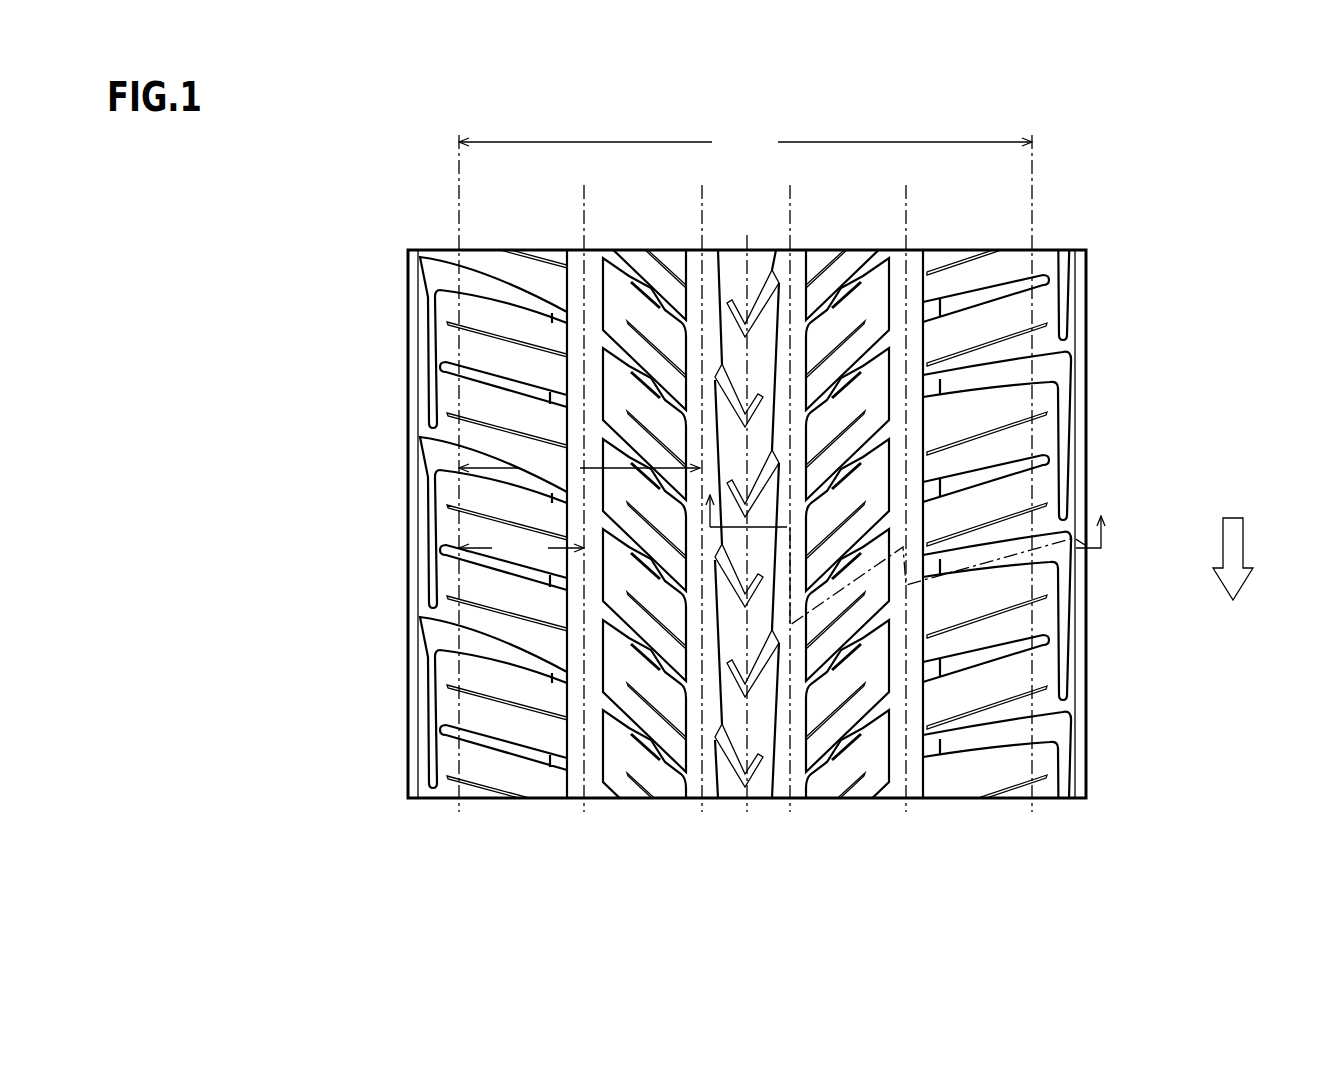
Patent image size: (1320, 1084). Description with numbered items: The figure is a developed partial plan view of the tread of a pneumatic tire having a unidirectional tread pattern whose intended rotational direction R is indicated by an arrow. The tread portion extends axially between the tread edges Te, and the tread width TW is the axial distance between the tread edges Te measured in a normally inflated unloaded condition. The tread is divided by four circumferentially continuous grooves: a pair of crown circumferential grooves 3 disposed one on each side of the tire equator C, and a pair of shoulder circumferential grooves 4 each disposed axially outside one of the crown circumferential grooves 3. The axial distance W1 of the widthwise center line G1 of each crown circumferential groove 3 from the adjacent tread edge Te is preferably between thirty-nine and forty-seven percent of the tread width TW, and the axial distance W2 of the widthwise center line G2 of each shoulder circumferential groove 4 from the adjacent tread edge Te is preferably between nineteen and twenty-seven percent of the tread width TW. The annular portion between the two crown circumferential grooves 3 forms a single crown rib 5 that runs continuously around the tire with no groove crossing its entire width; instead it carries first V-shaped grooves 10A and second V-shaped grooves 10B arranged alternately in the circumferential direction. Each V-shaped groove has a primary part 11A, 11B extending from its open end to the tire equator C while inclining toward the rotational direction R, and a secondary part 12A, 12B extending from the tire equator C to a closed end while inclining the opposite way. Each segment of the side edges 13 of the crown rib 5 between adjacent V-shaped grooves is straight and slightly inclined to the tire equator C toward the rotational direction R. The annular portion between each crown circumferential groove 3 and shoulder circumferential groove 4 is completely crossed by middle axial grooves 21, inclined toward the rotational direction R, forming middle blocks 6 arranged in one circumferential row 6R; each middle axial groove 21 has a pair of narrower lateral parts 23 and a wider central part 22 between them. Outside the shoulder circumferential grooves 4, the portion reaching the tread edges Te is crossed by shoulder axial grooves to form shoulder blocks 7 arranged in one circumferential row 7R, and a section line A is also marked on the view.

The crown circumferential groove 3 is at (734, 480).
The shoulder circumferential groove 4 is at (748, 487).
The crown rib 5 is at (711, 554).
The middle block 6 is at (746, 480).
The shoulder block 7 is at (746, 476).
The circumferential row of middle blocks 6R is at (746, 560).
The circumferential row of shoulder blocks 7R is at (489, 245).
The first V-shaped groove 10A is at (711, 486).
The primary part of first V-shaped groove 11A is at (736, 688).
The secondary part of first V-shaped groove 12A is at (757, 674).
The second V-shaped groove 10B is at (742, 646).
The primary part of second V-shaped groove 11B is at (738, 780).
The secondary part of second V-shaped groove 12B is at (757, 778).
The side edge of crown rib 13 is at (596, 516).
The middle axial groove 21 is at (742, 537).
The central part of middle axial groove 22 is at (862, 737).
The lateral part of middle axial groove 23 is at (810, 770).
The tread edge Te is at (746, 488).
The tread width TW is at (745, 142).
The tire equator C is at (744, 508).
The widthwise center line of crown circumferential groove G1 is at (742, 513).
The widthwise center line of shoulder circumferential groove G2 is at (745, 513).
The axial distance of crown groove center line from tread edge W1 is at (579, 468).
The axial distance of shoulder groove center line from tread edge W2 is at (521, 548).
The section line A- A is at (906, 545).
The intended tire rotational direction R is at (1233, 544).